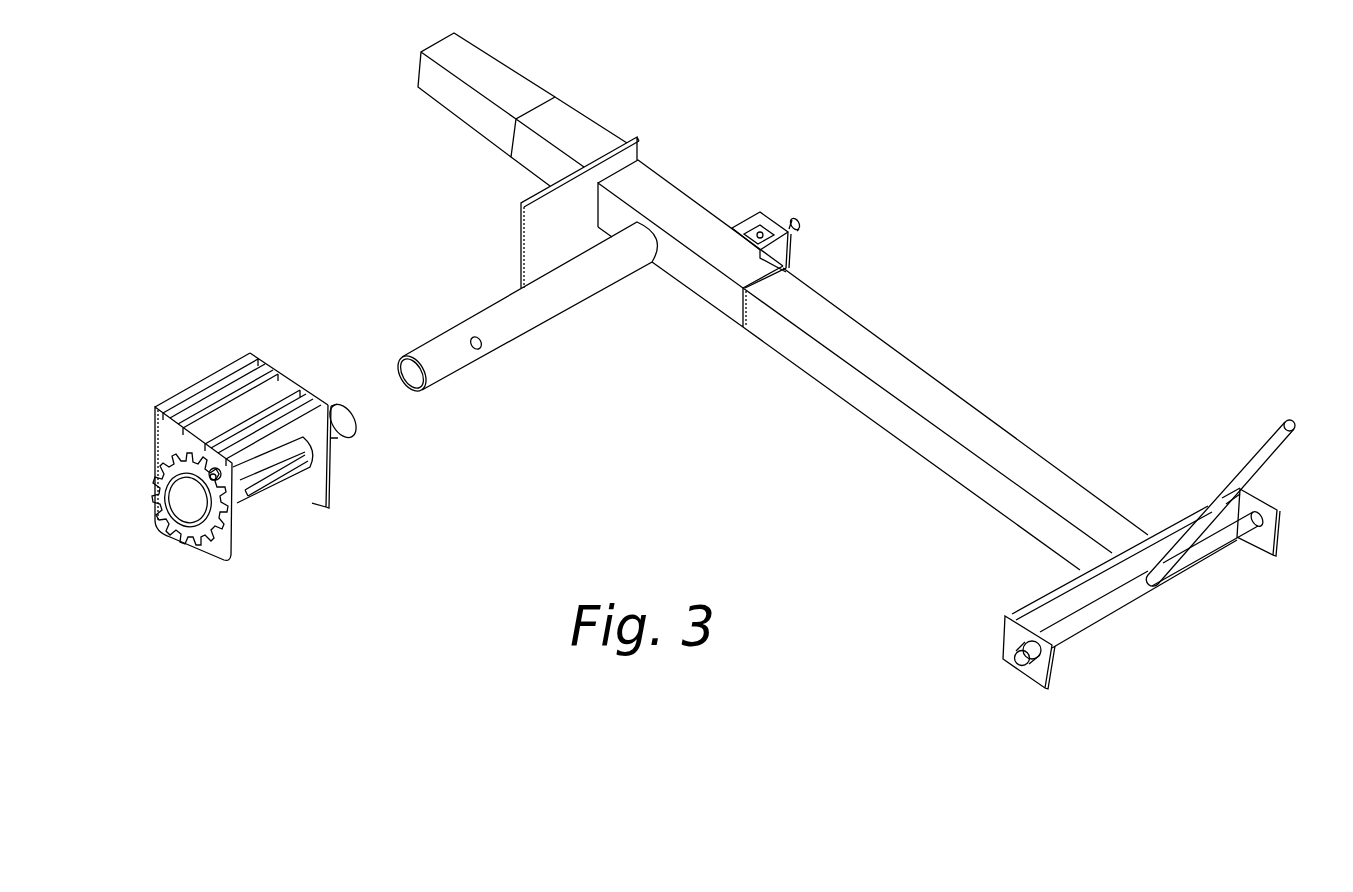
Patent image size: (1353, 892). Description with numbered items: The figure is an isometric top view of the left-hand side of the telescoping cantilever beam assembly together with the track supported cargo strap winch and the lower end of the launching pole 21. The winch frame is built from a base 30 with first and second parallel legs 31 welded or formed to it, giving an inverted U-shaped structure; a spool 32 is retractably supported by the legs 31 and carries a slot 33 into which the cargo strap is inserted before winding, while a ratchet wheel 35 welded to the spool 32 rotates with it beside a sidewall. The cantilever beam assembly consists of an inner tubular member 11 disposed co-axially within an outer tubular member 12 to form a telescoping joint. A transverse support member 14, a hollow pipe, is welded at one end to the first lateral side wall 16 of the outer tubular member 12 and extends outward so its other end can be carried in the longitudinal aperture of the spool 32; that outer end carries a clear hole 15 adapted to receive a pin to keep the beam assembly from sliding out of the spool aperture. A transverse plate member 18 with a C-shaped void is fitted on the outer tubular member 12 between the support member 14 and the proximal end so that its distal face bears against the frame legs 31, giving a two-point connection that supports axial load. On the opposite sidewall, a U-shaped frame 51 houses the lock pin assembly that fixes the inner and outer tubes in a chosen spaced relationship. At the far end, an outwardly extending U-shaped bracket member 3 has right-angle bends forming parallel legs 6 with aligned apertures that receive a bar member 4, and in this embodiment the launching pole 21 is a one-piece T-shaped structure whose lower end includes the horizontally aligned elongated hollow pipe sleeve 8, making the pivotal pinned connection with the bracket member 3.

The U-shaped bracket member 3 is at (1043, 605).
The bar member 4 is at (1020, 665).
The parallel legs 6 is at (1010, 630).
The elongated hollow pipe sleeve 8 is at (1123, 598).
The inner tubular member 11 is at (906, 378).
The outer tubular member 12 is at (663, 195).
The transverse support member 14 is at (551, 305).
The hole 15 is at (483, 347).
The first lateral side wall 16 is at (691, 269).
The transverse plate member 18 is at (536, 222).
The launching pole 21 is at (1247, 473).
The base 30 is at (222, 372).
The parallel legs 31 is at (160, 430).
The spool 32 is at (241, 472).
The slot 33 is at (299, 481).
The ratchet wheel 35 is at (200, 530).
The U-shaped frame 51 is at (765, 217).